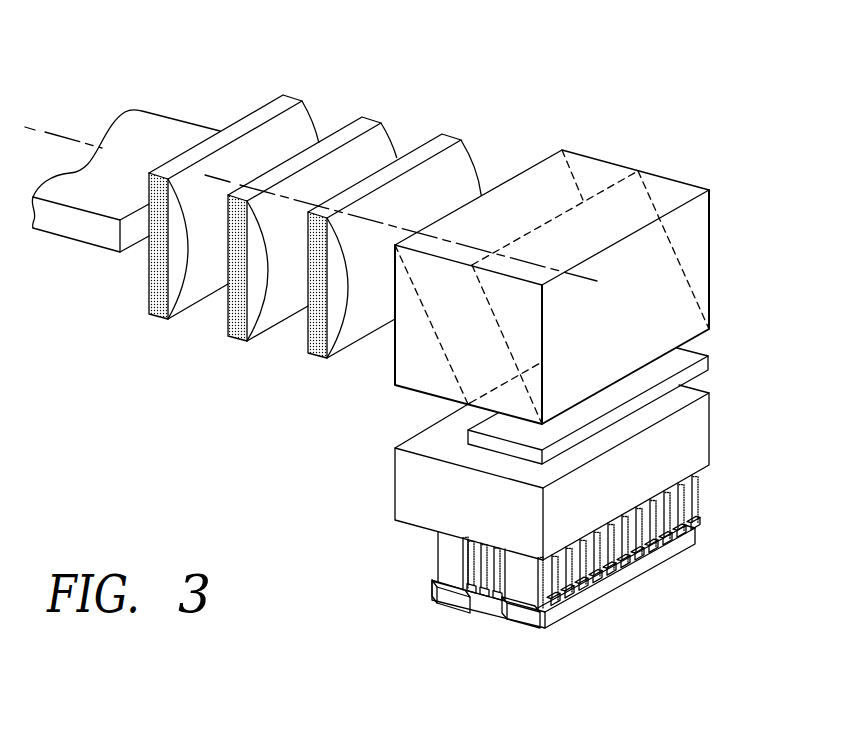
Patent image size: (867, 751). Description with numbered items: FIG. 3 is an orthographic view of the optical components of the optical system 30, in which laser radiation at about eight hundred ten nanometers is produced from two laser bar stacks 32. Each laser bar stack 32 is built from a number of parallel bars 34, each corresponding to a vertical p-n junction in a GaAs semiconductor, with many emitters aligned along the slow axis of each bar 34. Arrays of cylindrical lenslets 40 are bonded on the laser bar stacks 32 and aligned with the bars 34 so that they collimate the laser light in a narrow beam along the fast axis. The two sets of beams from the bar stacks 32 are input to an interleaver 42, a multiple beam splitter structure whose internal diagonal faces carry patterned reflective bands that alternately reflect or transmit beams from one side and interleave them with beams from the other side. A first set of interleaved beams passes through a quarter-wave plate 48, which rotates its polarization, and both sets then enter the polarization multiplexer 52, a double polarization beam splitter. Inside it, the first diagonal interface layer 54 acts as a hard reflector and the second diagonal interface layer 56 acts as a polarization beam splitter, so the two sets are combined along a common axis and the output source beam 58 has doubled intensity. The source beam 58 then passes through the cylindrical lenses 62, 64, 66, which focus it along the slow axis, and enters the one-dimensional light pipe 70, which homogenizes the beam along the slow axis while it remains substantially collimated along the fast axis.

The optical system 30 is at (232, 412).
The laser bar stack 32 is at (502, 618).
The parallel bars 34 is at (678, 547).
The cylindrical lenslets 40 is at (697, 515).
The interleaver 42 is at (710, 440).
The quarter-wave plate 48 is at (703, 373).
The polarization multiplexer 52 is at (561, 263).
The first diagonal interface layer 54 is at (652, 208).
The second diagonal interface layer 56 is at (452, 367).
The source beam 58 is at (72, 138).
The cylindrical lens 62 is at (448, 137).
The cylindrical lens 64 is at (373, 120).
The cylindrical lens 66 is at (293, 94).
The one-dimensional light pipe 70 is at (86, 230).